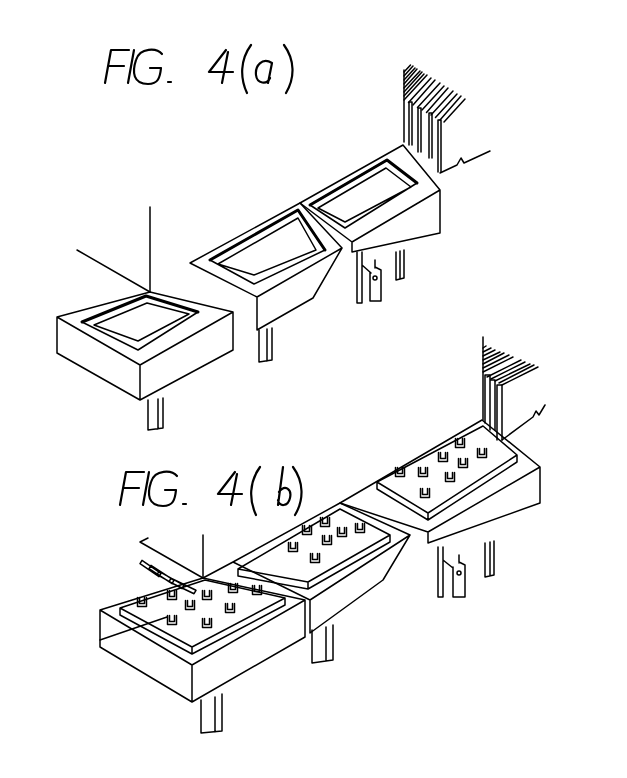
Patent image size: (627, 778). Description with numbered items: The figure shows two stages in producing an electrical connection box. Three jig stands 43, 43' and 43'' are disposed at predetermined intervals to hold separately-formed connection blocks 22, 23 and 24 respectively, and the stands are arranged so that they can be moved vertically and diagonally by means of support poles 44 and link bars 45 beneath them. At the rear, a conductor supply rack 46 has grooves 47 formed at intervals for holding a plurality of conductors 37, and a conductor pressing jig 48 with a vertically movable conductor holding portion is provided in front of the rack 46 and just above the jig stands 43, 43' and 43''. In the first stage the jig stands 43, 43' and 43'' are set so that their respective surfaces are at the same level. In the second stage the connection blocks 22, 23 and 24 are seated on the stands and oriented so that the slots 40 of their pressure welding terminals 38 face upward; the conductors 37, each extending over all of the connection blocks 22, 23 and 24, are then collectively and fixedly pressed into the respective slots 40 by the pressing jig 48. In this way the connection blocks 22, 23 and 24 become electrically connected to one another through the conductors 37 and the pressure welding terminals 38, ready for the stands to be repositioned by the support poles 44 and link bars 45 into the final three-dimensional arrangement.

In FIG. 4B, the connection block 22 is at (527, 472).
In FIG. 4B, the connection block 23 is at (367, 543).
In FIG. 4B, the connection block 24 is at (252, 604).
In FIG. 4B, the conductors 37 is at (165, 582).
In FIG. 4B, the pressure welding terminals 38 is at (230, 617).
In FIG. 4B, the slots 40 is at (100, 640).
In FIG. 4A, the jig stand 43 is at (394, 204).
In FIG. 4B, the jig stand 43 is at (465, 486).
In FIG. 4A, the jig stand 43' is at (268, 279).
In FIG. 4B, the jig stand 43' is at (309, 586).
In FIG. 4A, the jig stand 43'' is at (145, 365).
In FIG. 4B, the jig stand 43'' is at (202, 650).
In FIG. 4A, the support poles 44 is at (164, 417).
In FIG. 4B, the support poles 44 is at (492, 567).
In FIG. 4A, the link bars 45 is at (381, 296).
In FIG. 4B, the link bars 45 is at (465, 595).
In FIG. 4A, the conductor supply rack 46 is at (463, 163).
In FIG. 4B, the conductor supply rack 46 is at (537, 414).
In FIG. 4A, the grooves 47 is at (430, 130).
In FIG. 4A, the conductor pressing jig 48 is at (92, 259).
In FIG. 4B, the conductor pressing jig 48 is at (140, 542).